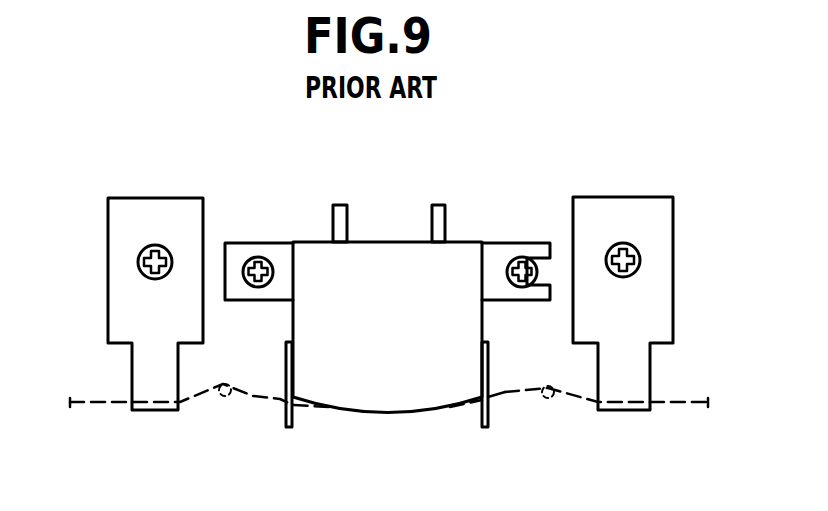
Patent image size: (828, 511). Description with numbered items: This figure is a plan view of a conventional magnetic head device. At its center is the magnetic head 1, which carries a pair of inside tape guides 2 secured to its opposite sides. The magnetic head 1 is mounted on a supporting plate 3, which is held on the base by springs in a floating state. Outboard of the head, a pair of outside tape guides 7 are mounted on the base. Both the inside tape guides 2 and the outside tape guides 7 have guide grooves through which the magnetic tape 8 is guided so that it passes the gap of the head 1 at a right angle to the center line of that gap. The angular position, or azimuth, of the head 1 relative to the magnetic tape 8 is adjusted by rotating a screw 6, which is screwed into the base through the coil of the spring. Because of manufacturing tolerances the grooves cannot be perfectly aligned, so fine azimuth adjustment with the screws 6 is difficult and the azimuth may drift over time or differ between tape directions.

The magnetic head 1 is at (378, 277).
The inside tape guides 2 is at (297, 423).
The supporting plate 3 is at (240, 248).
The screw 6 is at (260, 260).
The outside tape guides 7 is at (113, 295).
The magnetic tape 8 is at (253, 397).